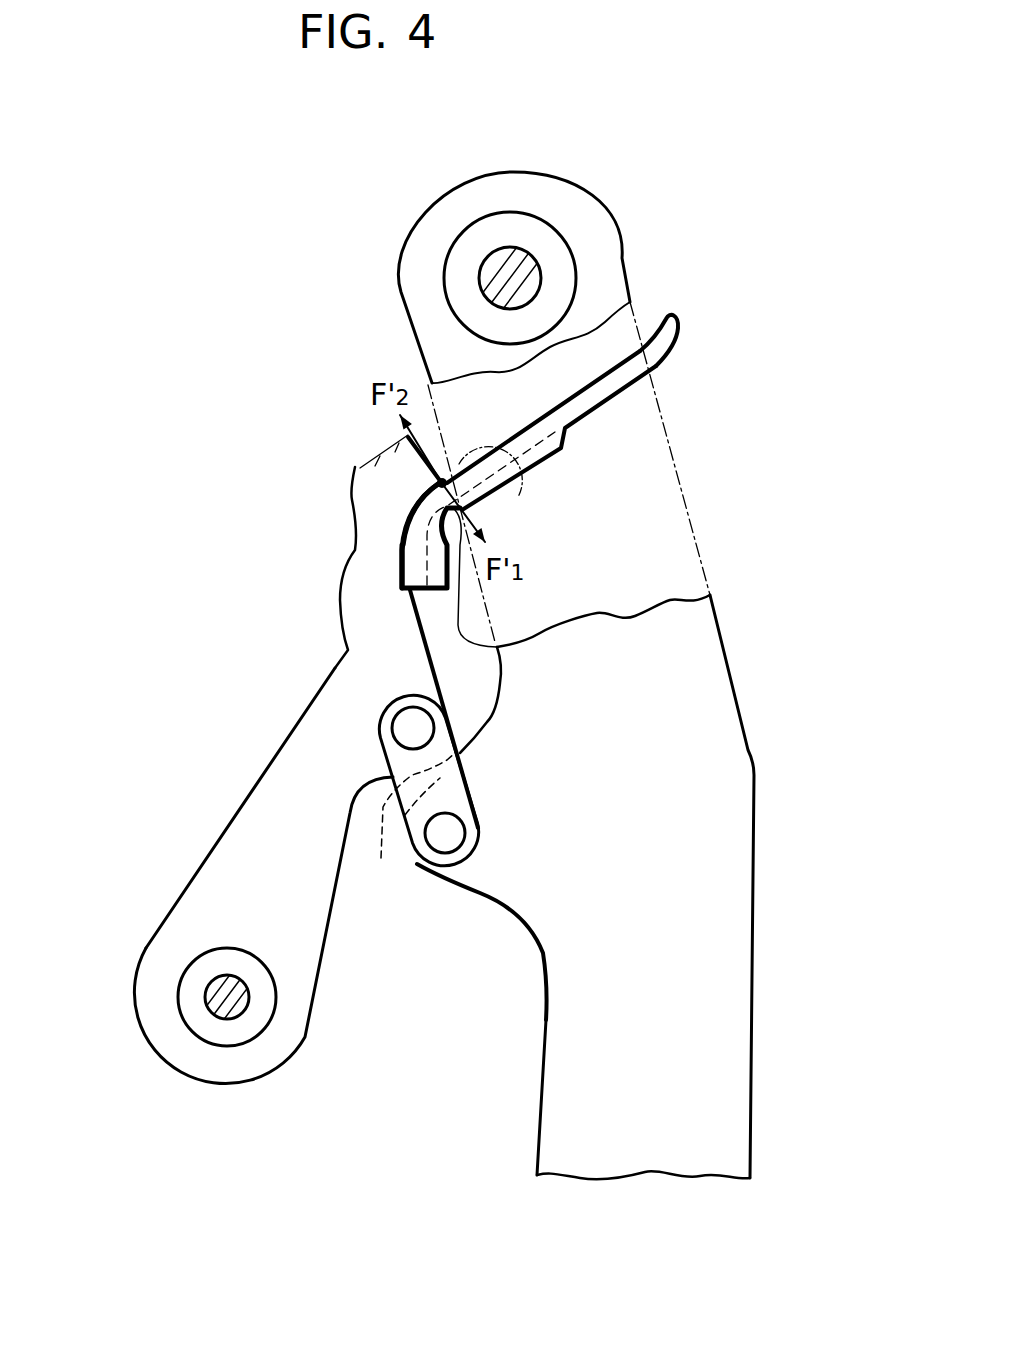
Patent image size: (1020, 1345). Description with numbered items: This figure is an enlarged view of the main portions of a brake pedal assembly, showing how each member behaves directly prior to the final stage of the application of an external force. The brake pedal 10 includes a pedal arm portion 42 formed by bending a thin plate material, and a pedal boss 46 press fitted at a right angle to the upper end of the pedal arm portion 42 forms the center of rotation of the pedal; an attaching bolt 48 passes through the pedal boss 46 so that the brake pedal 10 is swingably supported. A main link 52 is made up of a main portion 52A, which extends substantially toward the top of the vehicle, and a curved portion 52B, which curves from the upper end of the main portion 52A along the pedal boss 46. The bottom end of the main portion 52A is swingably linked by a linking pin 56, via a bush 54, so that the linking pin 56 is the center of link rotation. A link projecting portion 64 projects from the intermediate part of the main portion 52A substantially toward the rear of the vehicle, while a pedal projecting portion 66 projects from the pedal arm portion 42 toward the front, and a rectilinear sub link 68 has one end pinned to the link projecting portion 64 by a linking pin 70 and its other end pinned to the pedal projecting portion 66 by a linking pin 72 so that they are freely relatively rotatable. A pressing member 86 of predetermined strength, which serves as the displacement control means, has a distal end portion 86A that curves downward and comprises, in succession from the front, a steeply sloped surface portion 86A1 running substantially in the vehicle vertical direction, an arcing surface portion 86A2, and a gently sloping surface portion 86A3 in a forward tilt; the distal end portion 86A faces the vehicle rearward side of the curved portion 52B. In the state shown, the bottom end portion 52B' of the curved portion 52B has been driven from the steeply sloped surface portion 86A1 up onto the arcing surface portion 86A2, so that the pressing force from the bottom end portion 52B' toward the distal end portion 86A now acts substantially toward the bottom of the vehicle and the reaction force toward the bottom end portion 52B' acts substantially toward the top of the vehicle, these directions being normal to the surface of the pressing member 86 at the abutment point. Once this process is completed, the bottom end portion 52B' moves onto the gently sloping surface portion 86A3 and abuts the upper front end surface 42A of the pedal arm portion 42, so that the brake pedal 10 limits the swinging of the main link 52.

The brake pedal 10 is at (776, 837).
The pedal arm portion 42 is at (628, 884).
The upper front end surface 42A is at (518, 497).
The pedal boss 46 is at (560, 250).
The attaching bolt 48 is at (513, 265).
The main link 52 is at (229, 908).
The main portion 52A is at (240, 842).
The curved portion 52B is at (376, 495).
The bottom end portion of the curved portion 52B' is at (529, 700).
The bush 54 is at (250, 1020).
The linking pin 56 is at (208, 1013).
The link projecting portion 64 is at (407, 830).
The pedal projecting portion 66 is at (447, 875).
The sub link 68 is at (426, 824).
The linking pin 70 is at (395, 730).
The linking pin 72 is at (442, 838).
The pressing member 86 is at (615, 400).
The distal end portion 86A is at (292, 514).
The steeply sloped surface portion 86A1 is at (407, 558).
The arcing surface portion 86A2 is at (407, 510).
The gently sloping surface portion 86A3 is at (437, 462).